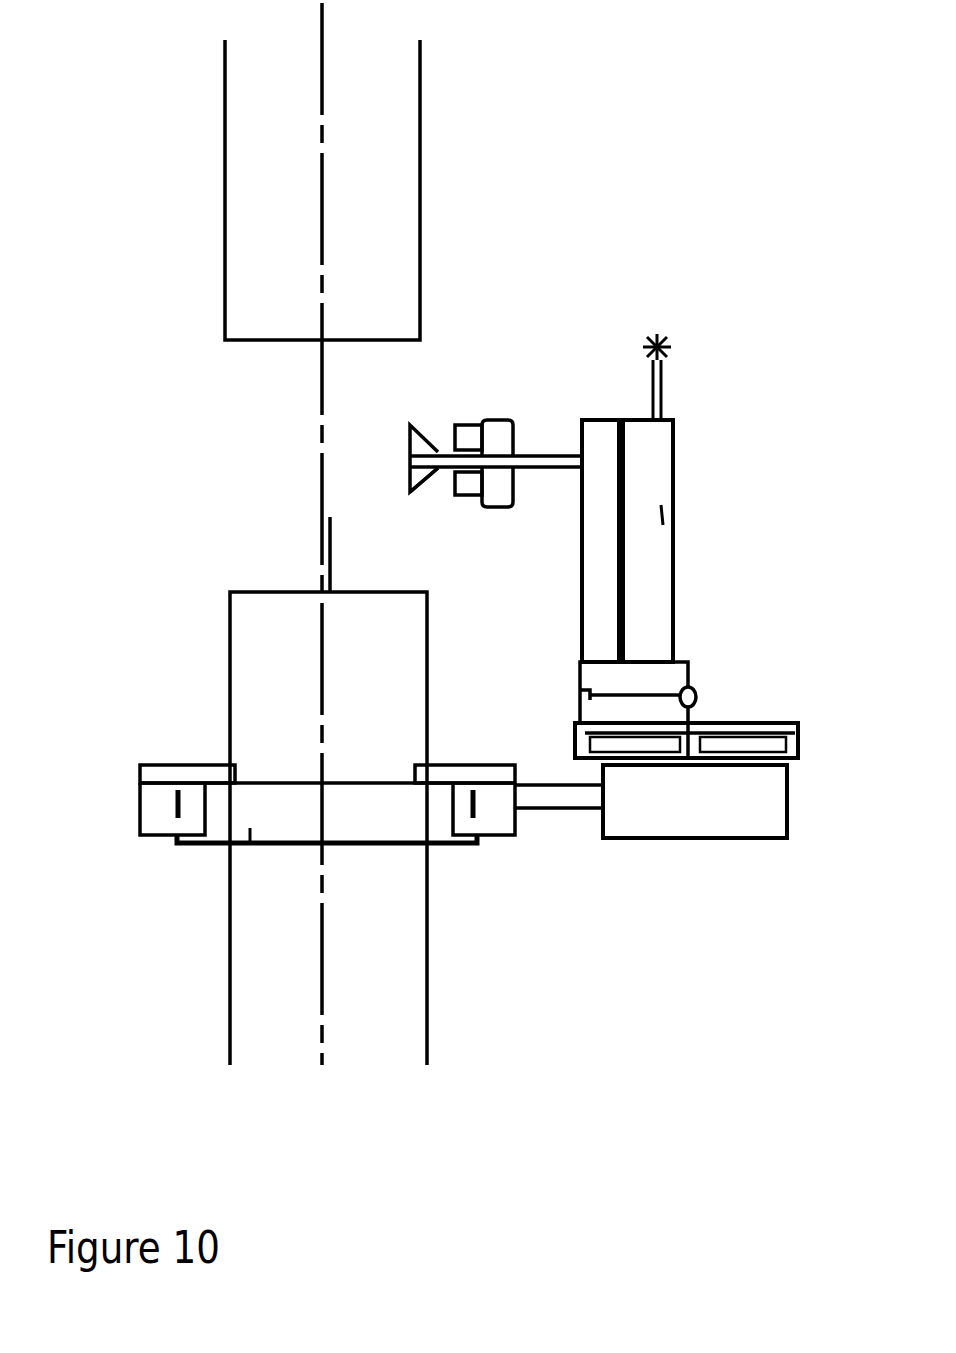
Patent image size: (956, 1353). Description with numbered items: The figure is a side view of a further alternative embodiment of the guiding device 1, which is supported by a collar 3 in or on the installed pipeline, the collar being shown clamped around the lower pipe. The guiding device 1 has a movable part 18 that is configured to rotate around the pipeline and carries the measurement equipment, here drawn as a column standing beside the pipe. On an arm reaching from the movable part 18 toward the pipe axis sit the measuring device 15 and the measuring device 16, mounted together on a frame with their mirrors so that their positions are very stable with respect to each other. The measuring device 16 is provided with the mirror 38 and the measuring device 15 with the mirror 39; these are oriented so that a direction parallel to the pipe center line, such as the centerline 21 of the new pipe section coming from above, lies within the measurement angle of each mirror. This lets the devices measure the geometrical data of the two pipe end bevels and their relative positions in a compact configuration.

The guiding device 1 is at (692, 892).
The collar 3 is at (245, 850).
The measuring device 15 is at (492, 495).
The measuring device 16 is at (492, 428).
The movable part 18 is at (674, 533).
The centerline 21 is at (318, 412).
The mirror 38 is at (421, 428).
The mirror 39 is at (412, 493).